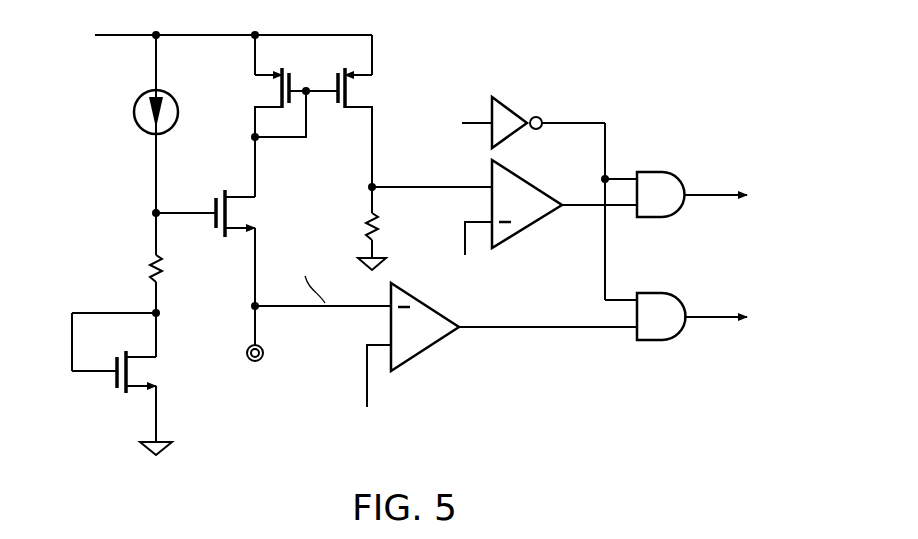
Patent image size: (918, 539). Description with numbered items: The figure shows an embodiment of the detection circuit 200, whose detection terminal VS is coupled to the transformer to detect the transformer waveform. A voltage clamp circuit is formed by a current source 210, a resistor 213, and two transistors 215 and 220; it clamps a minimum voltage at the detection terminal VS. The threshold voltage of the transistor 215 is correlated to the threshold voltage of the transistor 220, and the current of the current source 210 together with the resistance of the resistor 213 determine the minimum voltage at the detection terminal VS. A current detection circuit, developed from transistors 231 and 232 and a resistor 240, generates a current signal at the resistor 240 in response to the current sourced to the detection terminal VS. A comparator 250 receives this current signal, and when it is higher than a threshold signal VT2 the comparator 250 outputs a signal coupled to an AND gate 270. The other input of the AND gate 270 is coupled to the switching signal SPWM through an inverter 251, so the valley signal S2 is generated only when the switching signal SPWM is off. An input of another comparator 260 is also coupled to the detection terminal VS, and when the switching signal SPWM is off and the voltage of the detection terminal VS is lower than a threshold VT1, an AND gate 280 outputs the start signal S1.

The detection circuit 200 is at (788, 54).
The current source 210 is at (131, 112).
The resistor 213 is at (180, 267).
The transistor 215 is at (161, 403).
The transistor 220 is at (258, 213).
The transistor 231 is at (252, 88).
The transistor 232 is at (379, 88).
The resistor 240 is at (395, 226).
The comparator 250 is at (530, 202).
The inverter 251 is at (521, 112).
The comparator 260 is at (428, 330).
The AND gate 270 is at (661, 180).
The AND gate 280 is at (661, 302).